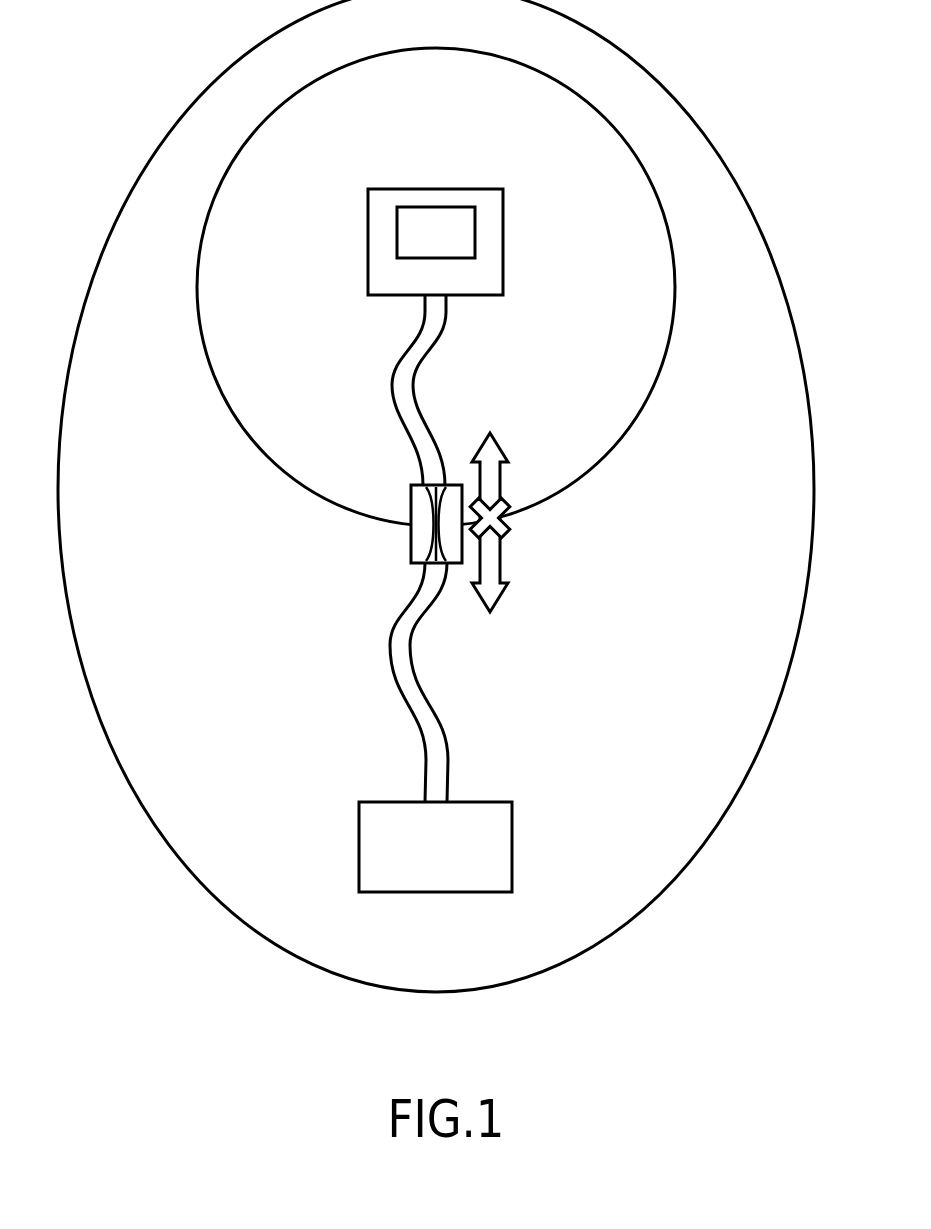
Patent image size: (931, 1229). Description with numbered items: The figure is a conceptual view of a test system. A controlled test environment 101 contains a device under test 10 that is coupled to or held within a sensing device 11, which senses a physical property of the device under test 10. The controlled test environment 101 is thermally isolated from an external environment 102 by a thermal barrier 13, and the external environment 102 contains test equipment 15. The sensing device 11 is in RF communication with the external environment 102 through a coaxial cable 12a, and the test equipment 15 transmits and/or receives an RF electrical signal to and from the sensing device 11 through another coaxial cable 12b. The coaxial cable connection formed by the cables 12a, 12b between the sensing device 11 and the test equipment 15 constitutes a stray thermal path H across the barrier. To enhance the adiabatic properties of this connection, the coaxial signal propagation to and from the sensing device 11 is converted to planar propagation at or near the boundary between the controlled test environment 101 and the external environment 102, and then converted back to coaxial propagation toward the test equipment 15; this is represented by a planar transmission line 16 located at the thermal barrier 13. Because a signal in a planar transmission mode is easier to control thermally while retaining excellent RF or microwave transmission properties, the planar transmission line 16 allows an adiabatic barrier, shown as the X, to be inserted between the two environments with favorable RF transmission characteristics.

The device under test 10 is at (475, 228).
The sensing device 11 is at (503, 276).
The coaxial cable 12a is at (415, 380).
The coaxial cable 12b is at (430, 697).
The thermal barrier 13 is at (653, 380).
The test equipment 15 is at (359, 837).
The planar transmission line 16 is at (420, 542).
The stray thermal path H is at (500, 480).
The controlled test environment 101 is at (297, 158).
The external environment 102 is at (598, 843).